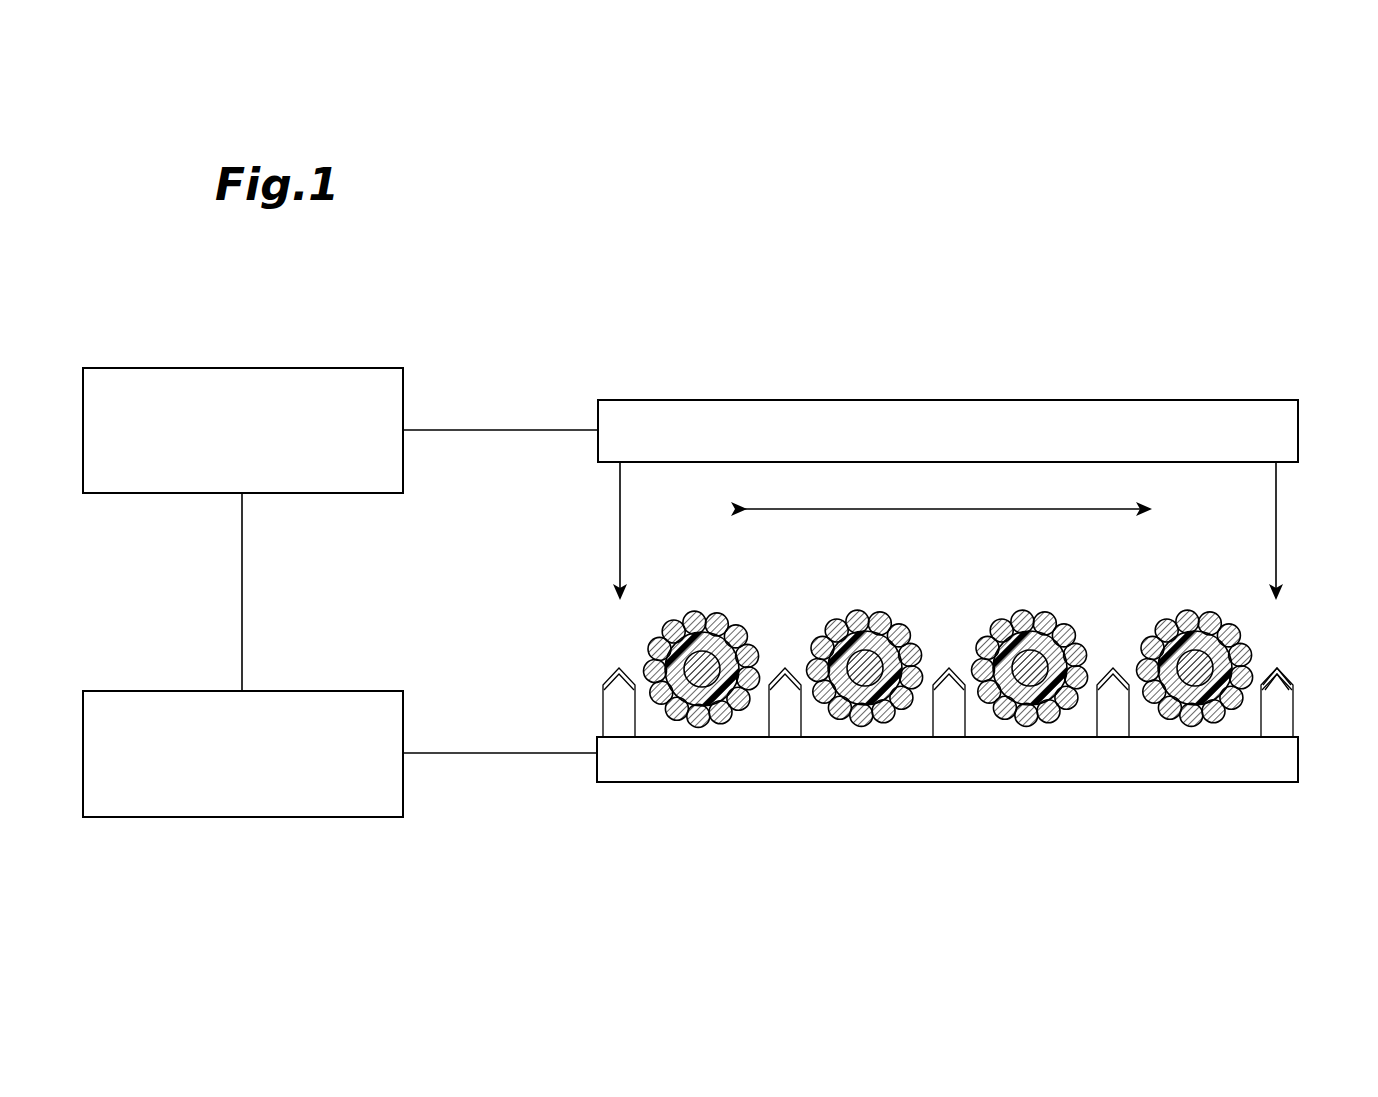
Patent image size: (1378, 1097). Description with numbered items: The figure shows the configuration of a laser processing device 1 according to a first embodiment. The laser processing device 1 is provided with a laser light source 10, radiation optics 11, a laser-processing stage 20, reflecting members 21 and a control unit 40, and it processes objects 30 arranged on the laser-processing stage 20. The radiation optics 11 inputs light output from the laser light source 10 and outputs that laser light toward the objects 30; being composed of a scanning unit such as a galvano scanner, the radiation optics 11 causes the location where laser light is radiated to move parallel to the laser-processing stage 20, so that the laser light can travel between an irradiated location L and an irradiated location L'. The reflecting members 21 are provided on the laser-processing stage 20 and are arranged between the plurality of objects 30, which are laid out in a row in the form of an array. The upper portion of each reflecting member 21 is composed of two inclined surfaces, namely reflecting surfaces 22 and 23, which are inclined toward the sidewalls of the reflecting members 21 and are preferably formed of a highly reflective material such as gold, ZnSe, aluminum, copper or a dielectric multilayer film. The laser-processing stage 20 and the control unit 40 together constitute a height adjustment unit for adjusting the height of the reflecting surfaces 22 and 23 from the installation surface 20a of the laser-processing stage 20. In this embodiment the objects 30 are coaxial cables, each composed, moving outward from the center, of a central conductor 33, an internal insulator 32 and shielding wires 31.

The laser processing device 1 is at (1240, 245).
The laser light source 10 is at (328, 368).
The radiation optics 11 is at (1235, 400).
The laser-processing stage 20 is at (1300, 760).
The installation surface 20a is at (1228, 737).
The reflecting members 21 is at (598, 704).
The inclined surface (reflecting surface) 22 is at (1277, 667).
The inclined surface (reflecting surface) 23 is at (1290, 678).
The objects 30 is at (943, 618).
The shielding wires 31 is at (670, 623).
The internal insulator 32 is at (712, 642).
The central conductor 33 is at (724, 619).
The control unit 40 is at (328, 691).
The irradiated location L is at (596, 530).
The irradiated location L' is at (1302, 530).